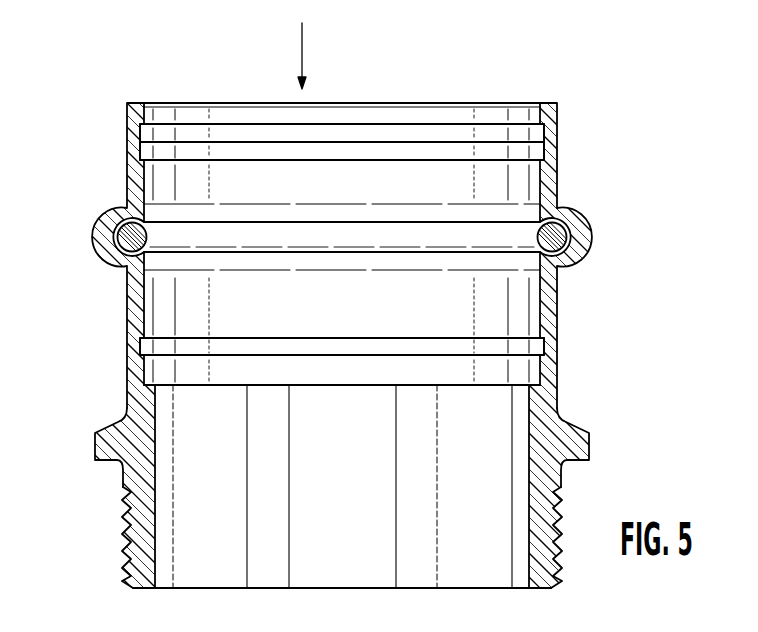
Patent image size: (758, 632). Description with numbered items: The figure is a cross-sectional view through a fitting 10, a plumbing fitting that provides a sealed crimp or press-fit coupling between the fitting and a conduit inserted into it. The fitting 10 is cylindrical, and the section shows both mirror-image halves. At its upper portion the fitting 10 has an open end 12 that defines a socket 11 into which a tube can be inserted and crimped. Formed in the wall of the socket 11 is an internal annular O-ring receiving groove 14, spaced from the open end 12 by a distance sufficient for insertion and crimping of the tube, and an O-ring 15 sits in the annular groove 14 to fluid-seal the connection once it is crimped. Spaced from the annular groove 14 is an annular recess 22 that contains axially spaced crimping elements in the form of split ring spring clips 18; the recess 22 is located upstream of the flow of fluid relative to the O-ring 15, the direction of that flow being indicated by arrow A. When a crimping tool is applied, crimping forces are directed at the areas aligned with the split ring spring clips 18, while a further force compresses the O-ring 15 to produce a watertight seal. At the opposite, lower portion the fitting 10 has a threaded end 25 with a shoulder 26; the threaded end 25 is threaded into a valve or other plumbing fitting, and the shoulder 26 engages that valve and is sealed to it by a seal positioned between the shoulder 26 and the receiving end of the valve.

The fitting 10 is at (617, 310).
The socket 11 is at (457, 180).
The open end 12 is at (372, 115).
The internal annular O-ring receiving groove 14 is at (120, 257).
The O-ring 15 is at (559, 271).
The split ring spring clips 18 is at (221, 154).
The annular recess 22 is at (142, 128).
The threaded end 25 is at (122, 550).
The shoulder 26 is at (107, 461).
The arrow indicating direction of fluid flow A is at (302, 51).